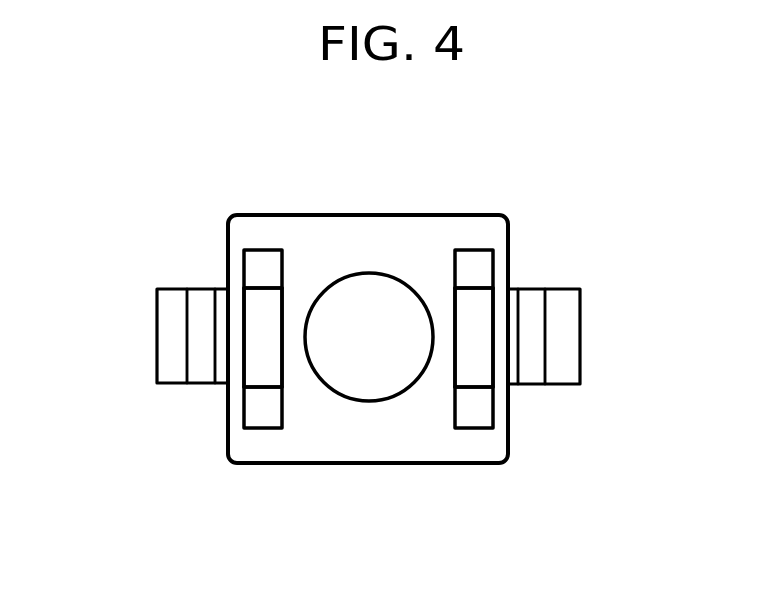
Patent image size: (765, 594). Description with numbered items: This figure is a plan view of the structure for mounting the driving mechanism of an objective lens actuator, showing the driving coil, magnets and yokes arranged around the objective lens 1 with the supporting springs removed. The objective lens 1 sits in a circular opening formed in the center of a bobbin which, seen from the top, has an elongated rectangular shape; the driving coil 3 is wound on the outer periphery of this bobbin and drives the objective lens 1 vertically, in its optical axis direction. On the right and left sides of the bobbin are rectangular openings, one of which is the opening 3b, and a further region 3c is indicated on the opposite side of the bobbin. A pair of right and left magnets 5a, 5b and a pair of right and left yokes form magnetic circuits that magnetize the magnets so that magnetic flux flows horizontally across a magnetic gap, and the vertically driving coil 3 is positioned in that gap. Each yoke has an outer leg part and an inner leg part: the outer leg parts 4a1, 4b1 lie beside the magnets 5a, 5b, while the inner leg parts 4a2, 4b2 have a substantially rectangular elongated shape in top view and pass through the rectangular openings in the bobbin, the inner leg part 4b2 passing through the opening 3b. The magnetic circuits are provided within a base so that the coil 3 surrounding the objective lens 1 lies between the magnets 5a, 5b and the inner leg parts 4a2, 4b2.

The objective lens 1 is at (377, 298).
The driving coil 3 is at (230, 222).
The rectangular opening 3b is at (267, 271).
The right flange portion 3c is at (478, 263).
The outer leg part 4a1 is at (562, 336).
The inner leg part 4a2 is at (480, 305).
The outer leg part 4b1 is at (172, 343).
The inner leg part 4b2 is at (262, 368).
The magnet 5a is at (530, 370).
The magnet 5b is at (200, 372).